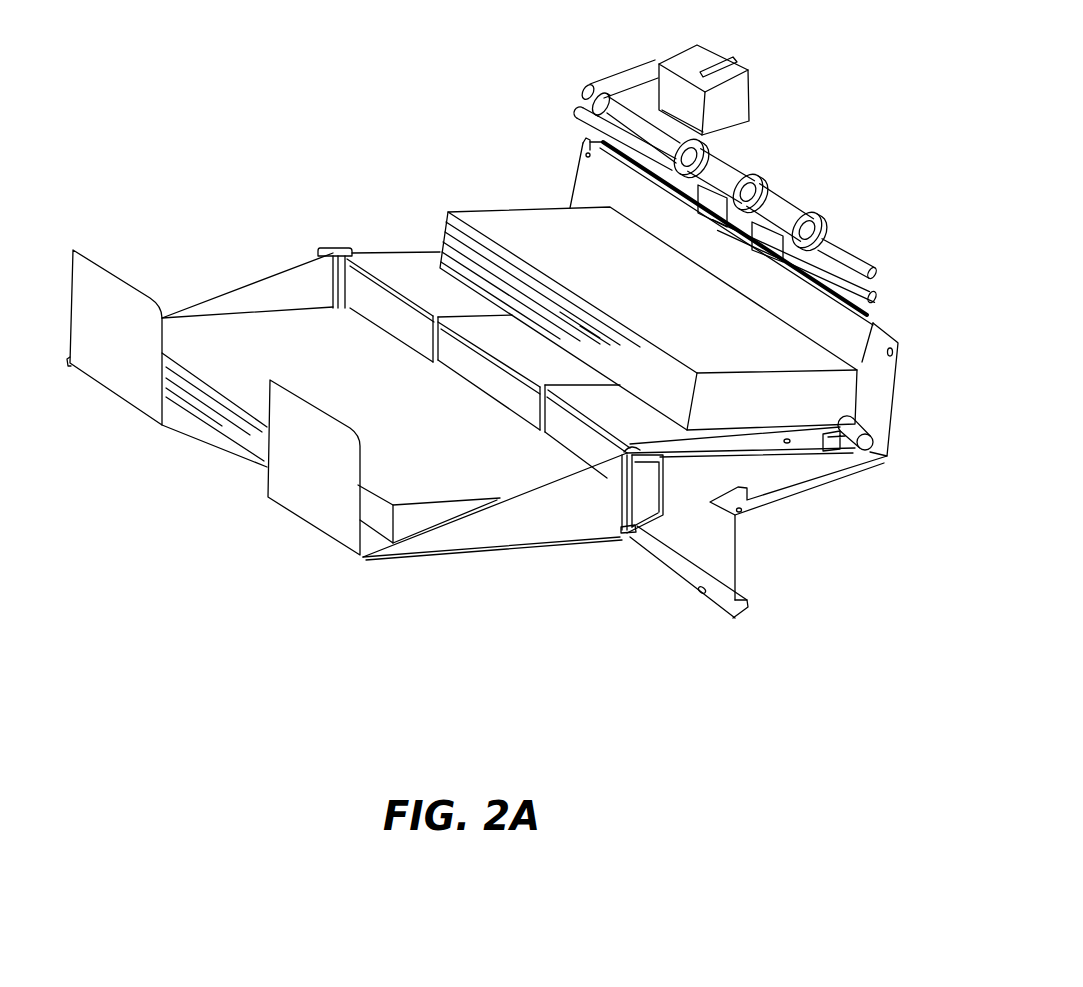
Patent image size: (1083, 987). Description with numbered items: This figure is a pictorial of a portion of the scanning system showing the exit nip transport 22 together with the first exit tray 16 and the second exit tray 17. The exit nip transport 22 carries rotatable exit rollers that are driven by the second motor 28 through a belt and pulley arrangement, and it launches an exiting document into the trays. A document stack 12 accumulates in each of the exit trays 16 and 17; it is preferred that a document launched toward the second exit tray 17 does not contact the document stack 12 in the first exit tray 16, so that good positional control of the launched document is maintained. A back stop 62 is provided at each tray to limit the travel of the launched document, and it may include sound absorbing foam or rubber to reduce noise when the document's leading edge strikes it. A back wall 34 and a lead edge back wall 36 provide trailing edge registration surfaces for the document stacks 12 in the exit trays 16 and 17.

The document stack 12 is at (508, 210).
The first exit tray 16 is at (407, 252).
The second exit tray 17 is at (283, 268).
The exit nip transport 22 is at (807, 186).
The second motor 28 is at (708, 60).
The back wall 34 is at (572, 182).
The lead edge back wall 36 is at (333, 298).
The back stop 62 is at (129, 406).